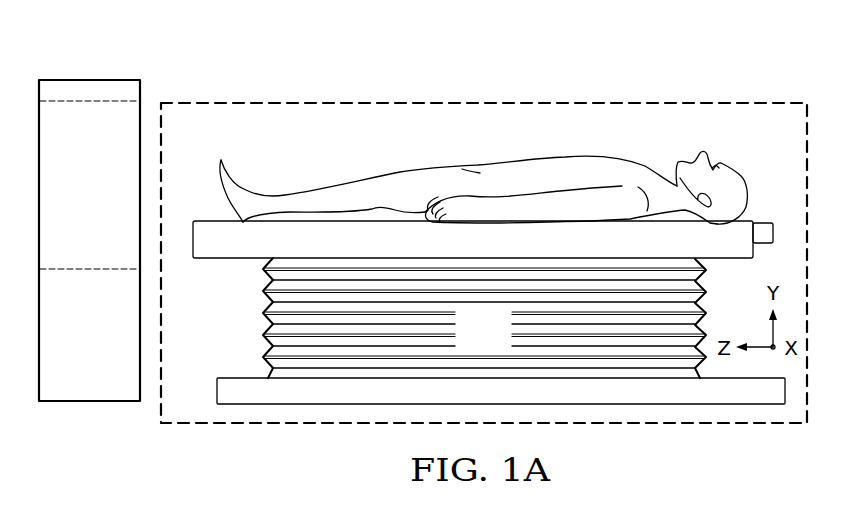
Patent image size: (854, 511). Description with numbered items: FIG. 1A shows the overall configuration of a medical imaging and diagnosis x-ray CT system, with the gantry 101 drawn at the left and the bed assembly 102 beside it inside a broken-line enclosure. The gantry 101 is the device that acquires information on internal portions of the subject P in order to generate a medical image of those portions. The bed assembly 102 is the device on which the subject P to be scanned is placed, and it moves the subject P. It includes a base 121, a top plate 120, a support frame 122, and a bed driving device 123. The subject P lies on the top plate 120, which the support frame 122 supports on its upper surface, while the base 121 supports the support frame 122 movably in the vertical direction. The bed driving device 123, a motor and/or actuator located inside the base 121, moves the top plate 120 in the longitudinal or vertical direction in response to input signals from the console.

The gantry 101 is at (88, 79).
The bed assembly 102 is at (371, 96).
The subject P is at (557, 150).
The top plate 120 is at (765, 221).
The base 121 is at (262, 332).
The support frame 122 is at (218, 259).
The bed driving device 123 is at (506, 341).